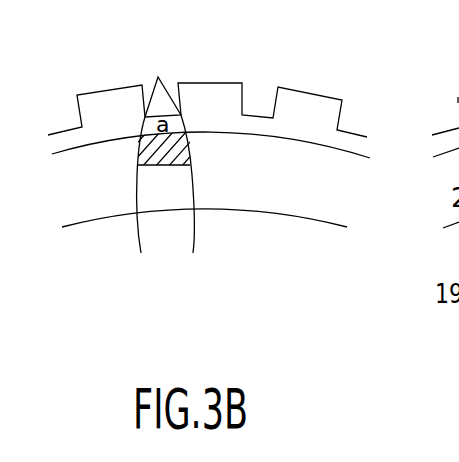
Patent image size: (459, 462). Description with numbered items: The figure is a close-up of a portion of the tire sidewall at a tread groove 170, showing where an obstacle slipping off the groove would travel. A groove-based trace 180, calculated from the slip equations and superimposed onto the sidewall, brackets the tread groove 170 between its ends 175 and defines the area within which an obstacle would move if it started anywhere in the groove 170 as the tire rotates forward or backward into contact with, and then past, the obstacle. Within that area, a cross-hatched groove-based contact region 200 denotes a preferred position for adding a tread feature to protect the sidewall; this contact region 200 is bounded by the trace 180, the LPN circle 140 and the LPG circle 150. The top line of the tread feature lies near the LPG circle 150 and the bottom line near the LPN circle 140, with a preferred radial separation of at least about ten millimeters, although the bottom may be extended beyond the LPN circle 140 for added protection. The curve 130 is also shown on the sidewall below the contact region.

The wheel body 130 is at (294, 212).
The LPN circle 140 is at (178, 174).
The LPG circle 150 is at (306, 141).
The tread groove 170 is at (158, 72).
The ends 175 is at (143, 115).
The trace 180 is at (136, 247).
The groove-based contact region 200 is at (189, 151).